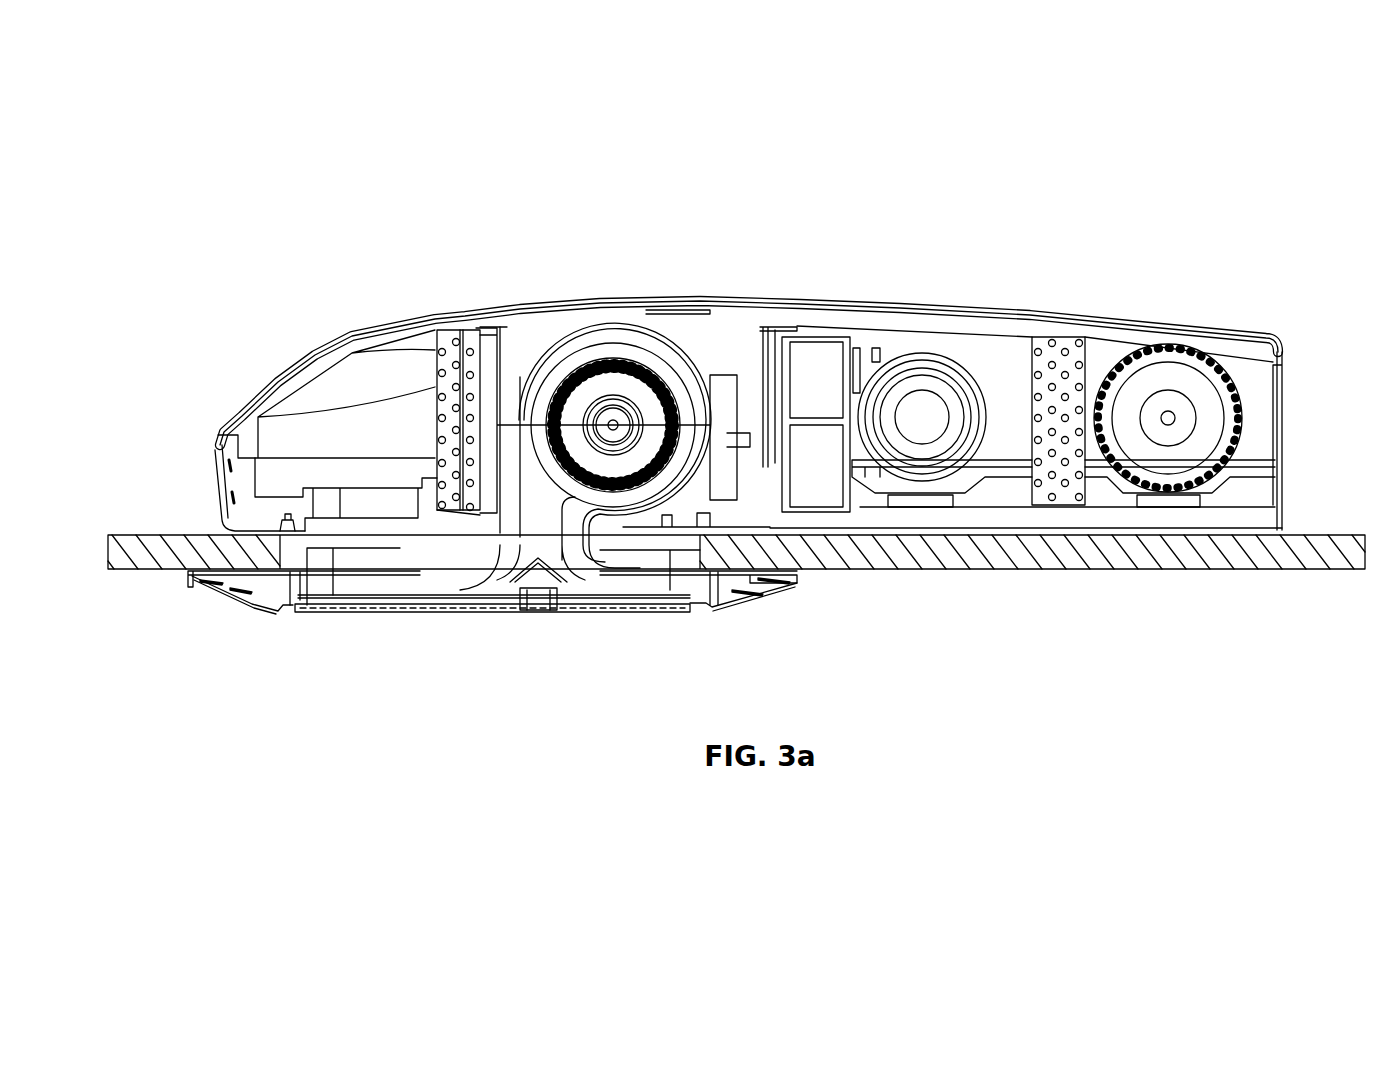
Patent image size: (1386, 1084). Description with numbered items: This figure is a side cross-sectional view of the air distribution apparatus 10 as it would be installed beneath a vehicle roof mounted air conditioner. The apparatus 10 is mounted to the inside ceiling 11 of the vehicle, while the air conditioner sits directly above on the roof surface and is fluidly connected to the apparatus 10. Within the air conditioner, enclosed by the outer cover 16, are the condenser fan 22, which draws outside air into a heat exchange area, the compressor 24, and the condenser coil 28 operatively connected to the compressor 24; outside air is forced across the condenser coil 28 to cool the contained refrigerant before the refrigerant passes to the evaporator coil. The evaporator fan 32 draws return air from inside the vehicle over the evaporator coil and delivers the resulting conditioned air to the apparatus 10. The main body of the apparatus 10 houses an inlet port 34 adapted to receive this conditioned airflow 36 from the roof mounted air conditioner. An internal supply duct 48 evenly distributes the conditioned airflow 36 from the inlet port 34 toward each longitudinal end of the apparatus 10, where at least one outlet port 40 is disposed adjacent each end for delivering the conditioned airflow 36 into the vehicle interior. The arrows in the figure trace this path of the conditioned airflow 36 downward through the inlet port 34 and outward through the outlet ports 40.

The air distribution apparatus 10 is at (280, 632).
The inside ceiling 11 is at (1215, 568).
The outer cover 16 is at (1162, 330).
The condenser fan 22 is at (1240, 397).
The compressor 24 is at (970, 362).
The condenser coil 28 is at (1055, 337).
The evaporator fan 32 is at (628, 327).
The inlet port 34 is at (520, 617).
The conditioned airflow 36 is at (537, 522).
The outlet port 40 is at (222, 612).
The internal supply duct 48 is at (582, 573).